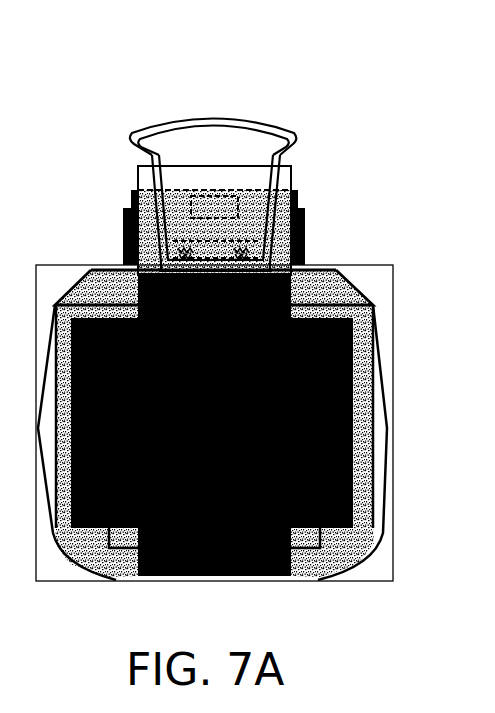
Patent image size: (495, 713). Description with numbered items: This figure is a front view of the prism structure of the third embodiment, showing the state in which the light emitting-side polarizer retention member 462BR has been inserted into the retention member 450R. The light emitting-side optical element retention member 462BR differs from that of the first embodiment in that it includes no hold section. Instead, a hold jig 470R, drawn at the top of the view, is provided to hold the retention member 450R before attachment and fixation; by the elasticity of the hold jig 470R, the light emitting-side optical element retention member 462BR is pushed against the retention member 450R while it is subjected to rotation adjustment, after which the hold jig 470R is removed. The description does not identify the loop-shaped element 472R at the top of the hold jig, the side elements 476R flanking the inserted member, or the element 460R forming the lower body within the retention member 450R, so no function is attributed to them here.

The hold jig 470R is at (252, 97).
The loop wire 472R is at (288, 134).
The light emitting-side optical element retention member 462BR is at (297, 218).
The side contact blocks 476R is at (116, 236).
The retention member 450R is at (385, 291).
The body with core 460R is at (368, 432).